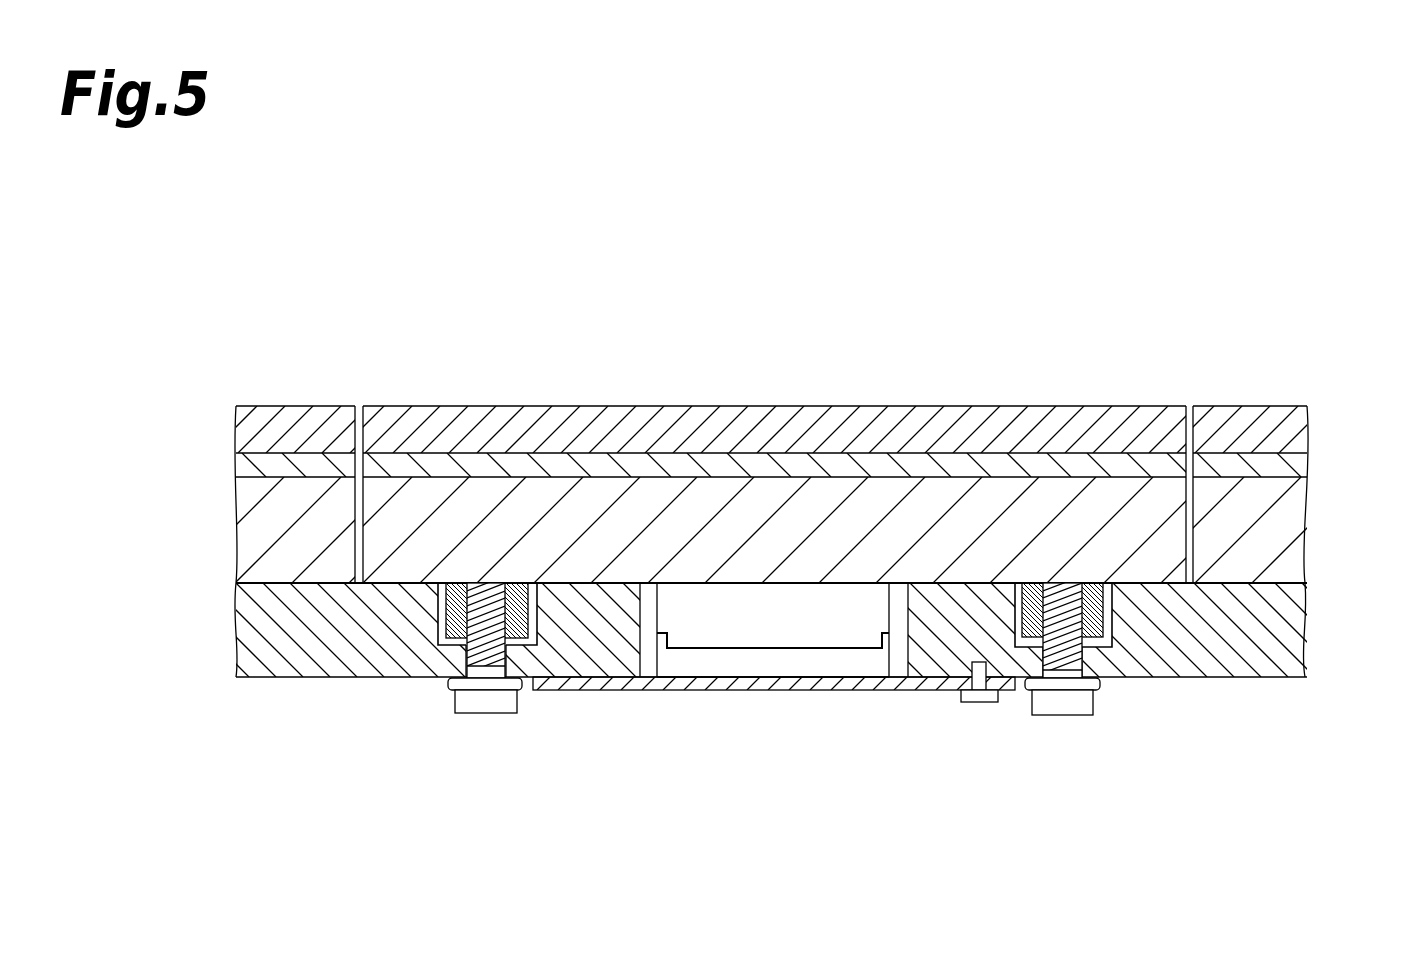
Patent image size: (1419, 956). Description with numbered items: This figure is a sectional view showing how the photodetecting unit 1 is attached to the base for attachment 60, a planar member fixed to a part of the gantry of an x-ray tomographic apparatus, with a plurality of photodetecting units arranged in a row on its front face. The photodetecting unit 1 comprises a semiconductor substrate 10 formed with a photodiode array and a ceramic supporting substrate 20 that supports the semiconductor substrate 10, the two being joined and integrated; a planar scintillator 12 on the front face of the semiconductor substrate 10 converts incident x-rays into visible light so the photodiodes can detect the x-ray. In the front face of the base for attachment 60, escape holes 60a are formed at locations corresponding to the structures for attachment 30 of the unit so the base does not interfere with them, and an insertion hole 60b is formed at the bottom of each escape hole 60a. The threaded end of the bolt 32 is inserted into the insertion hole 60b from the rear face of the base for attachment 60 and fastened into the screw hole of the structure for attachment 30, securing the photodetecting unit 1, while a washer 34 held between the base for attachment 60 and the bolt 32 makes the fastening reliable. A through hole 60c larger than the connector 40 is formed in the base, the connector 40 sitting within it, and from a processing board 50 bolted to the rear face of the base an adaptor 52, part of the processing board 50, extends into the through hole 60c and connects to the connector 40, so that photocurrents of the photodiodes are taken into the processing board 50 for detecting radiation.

The photodetecting unit 1 is at (768, 419).
The semiconductor substrate 10 is at (690, 463).
The scintillator 12 is at (496, 406).
The supporting substrate 20 is at (855, 497).
The structure for attachment 30 is at (778, 687).
The bolt 32 is at (486, 703).
The washer 34 is at (523, 692).
The connector 40 is at (763, 632).
The processing board 50 is at (935, 691).
The adaptor 52 is at (850, 665).
The base for attachment 60 is at (773, 673).
The escape hole 60a is at (438, 600).
The insertion hole 60b is at (447, 662).
The through hole 60c is at (646, 680).